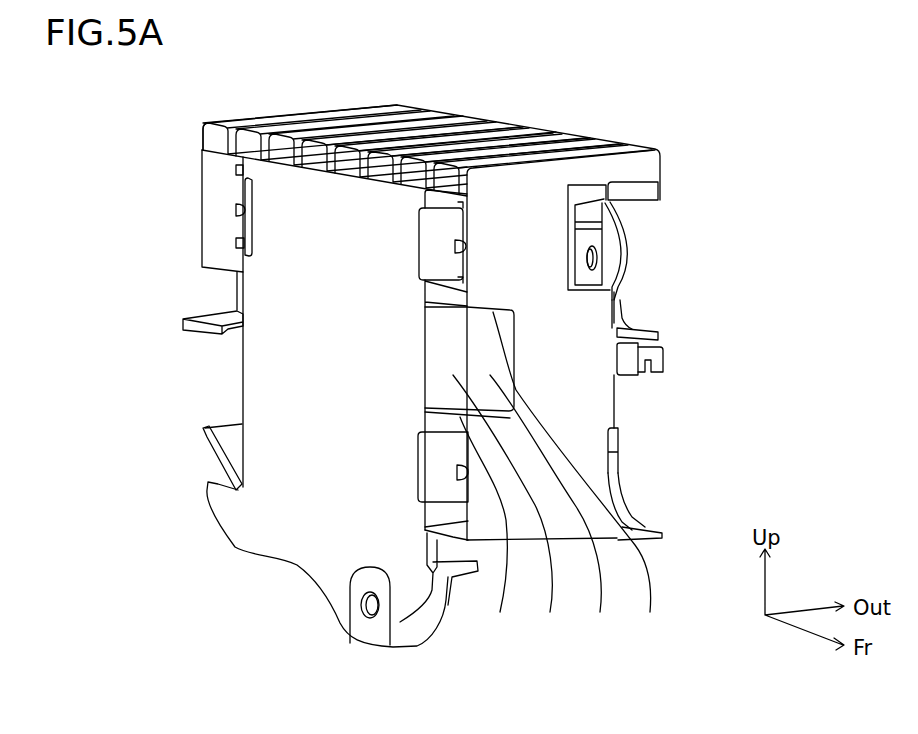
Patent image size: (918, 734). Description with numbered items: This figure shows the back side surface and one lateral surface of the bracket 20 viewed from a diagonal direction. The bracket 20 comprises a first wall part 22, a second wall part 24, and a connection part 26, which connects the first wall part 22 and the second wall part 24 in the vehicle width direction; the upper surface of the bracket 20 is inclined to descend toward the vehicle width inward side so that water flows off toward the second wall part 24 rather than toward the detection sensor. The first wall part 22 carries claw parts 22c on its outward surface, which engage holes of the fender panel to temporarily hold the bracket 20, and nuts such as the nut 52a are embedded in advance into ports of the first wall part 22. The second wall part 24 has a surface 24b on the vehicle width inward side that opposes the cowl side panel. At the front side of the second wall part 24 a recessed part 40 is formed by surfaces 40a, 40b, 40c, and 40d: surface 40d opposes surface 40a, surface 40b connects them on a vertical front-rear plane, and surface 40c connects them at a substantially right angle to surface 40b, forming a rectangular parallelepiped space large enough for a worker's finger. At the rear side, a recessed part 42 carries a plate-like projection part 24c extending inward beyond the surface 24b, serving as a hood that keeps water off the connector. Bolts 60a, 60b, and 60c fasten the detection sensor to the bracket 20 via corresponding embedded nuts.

The bracket 20 is at (321, 99).
The first wall part 22 is at (643, 158).
The claw part 22c is at (664, 352).
The second wall part 24 is at (496, 178).
The surface 24b is at (288, 465).
The projection part 24c is at (195, 312).
The connection part 26 is at (540, 197).
The recessed part 40 is at (565, 498).
The surface 40a is at (583, 477).
The surface 40b is at (556, 508).
The surface 40c is at (512, 508).
The surface 40d is at (491, 529).
The recessed part 42 is at (222, 387).
The nut 52a is at (622, 248).
The bolt 60a is at (455, 246).
The bolt 60b is at (236, 209).
The bolt 60c is at (456, 472).